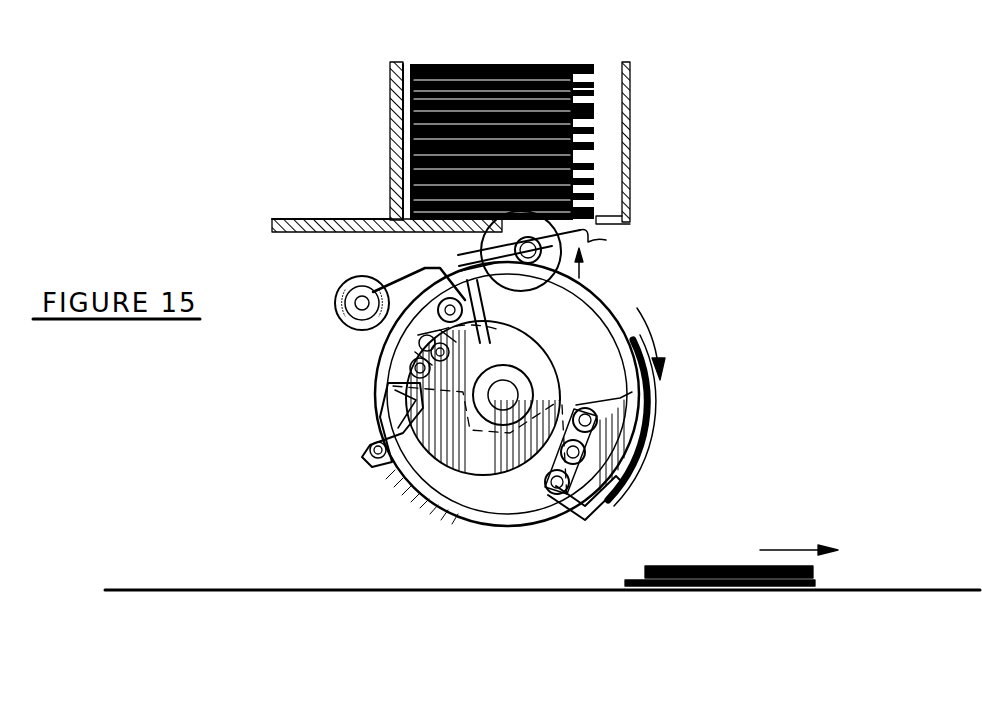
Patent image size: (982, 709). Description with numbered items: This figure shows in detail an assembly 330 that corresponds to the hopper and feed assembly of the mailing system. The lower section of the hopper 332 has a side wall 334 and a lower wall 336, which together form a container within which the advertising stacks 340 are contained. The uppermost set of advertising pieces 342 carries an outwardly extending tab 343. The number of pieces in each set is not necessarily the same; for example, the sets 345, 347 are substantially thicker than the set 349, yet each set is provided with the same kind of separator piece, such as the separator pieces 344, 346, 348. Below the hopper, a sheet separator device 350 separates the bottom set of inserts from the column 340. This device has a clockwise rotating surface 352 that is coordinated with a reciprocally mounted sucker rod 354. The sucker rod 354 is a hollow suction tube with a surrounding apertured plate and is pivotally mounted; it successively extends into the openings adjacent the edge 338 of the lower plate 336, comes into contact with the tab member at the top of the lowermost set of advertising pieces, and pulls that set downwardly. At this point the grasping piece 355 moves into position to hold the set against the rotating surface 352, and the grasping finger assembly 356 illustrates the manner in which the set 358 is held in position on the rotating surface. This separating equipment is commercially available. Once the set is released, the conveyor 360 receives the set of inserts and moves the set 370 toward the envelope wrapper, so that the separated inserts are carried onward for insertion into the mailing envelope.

The assembly 330 is at (378, 82).
The hopper 332 is at (400, 66).
The side wall 334 is at (390, 140).
The lower wall 336 is at (304, 232).
The edge of lower plate 338 is at (588, 274).
The advertising stacks 340 is at (558, 116).
The uppermost set of advertising pieces 342 is at (602, 72).
The outwardly extending tab 343 is at (584, 66).
The separator piece 344 is at (596, 80).
The set of advertising pieces 345 is at (596, 96).
The separator piece 346 is at (596, 146).
The set of advertising pieces 347 is at (596, 158).
The separator piece 348 is at (596, 182).
The set of advertising pieces 349 is at (596, 202).
The sheet separator device 350 is at (340, 354).
The clockwise rotating surface 352 is at (385, 490).
The sucker rod 354 is at (604, 242).
The grasping piece 355 is at (408, 292).
The grasping finger assembly 356 is at (618, 504).
The set 358 is at (660, 440).
The conveyor 360 is at (378, 588).
The set 370 is at (733, 566).